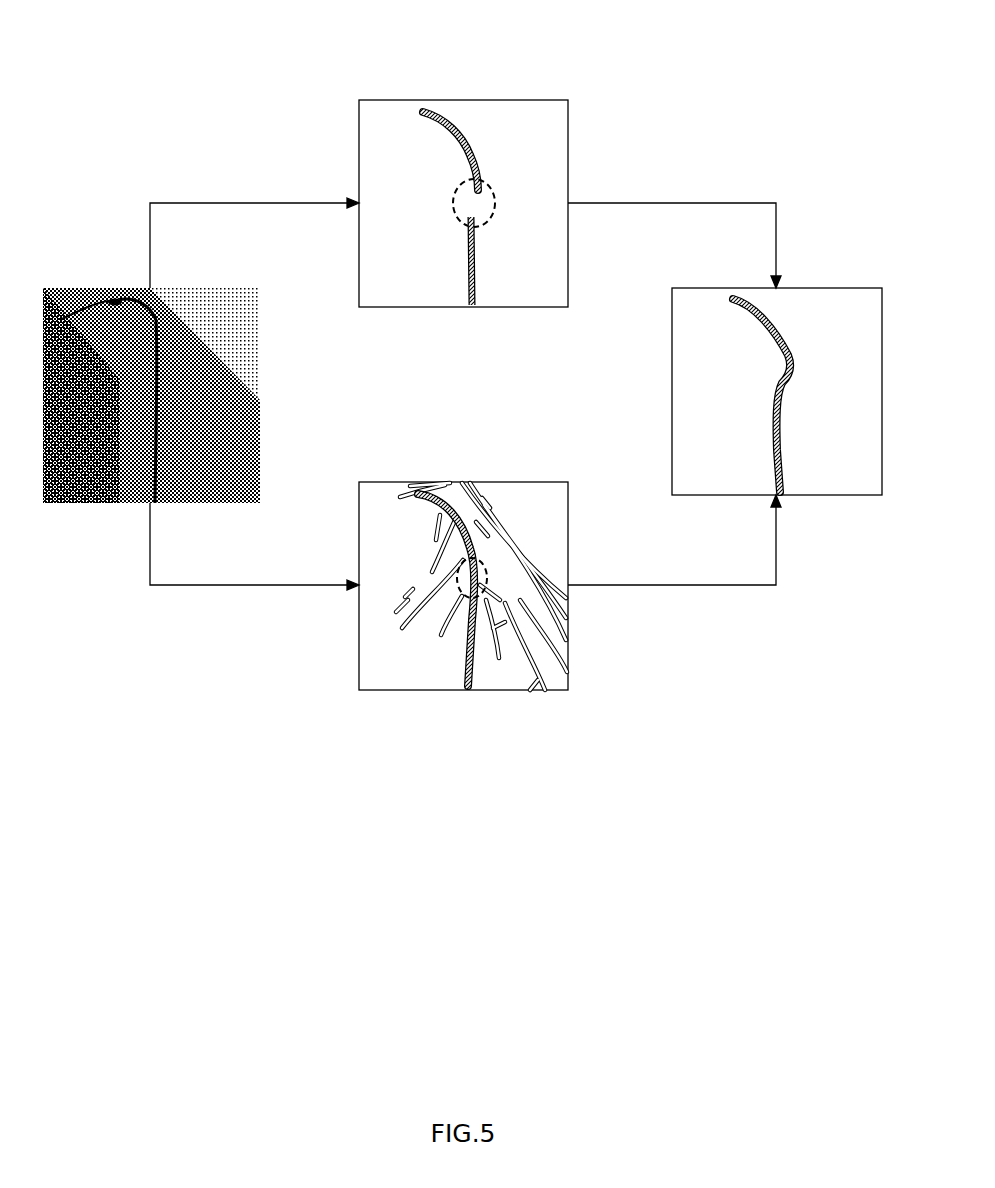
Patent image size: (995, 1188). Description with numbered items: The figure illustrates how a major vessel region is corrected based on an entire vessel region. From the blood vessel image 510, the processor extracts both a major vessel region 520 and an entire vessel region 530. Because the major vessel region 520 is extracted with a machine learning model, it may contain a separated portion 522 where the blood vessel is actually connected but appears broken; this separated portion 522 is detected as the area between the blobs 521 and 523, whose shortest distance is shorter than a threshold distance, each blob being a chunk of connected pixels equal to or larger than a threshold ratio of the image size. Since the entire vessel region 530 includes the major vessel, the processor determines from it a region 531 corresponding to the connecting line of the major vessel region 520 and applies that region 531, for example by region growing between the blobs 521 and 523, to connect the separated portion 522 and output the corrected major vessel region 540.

The blood vessel image 510 is at (94, 288).
The major vessel region 520 is at (518, 100).
The blob 521 is at (450, 108).
The separated portion 522 is at (495, 204).
The blob 523 is at (478, 280).
The entire vessel region 530 is at (513, 482).
The region corresponding to the connecting line 531 is at (456, 590).
The corrected major vessel region 540 is at (830, 288).